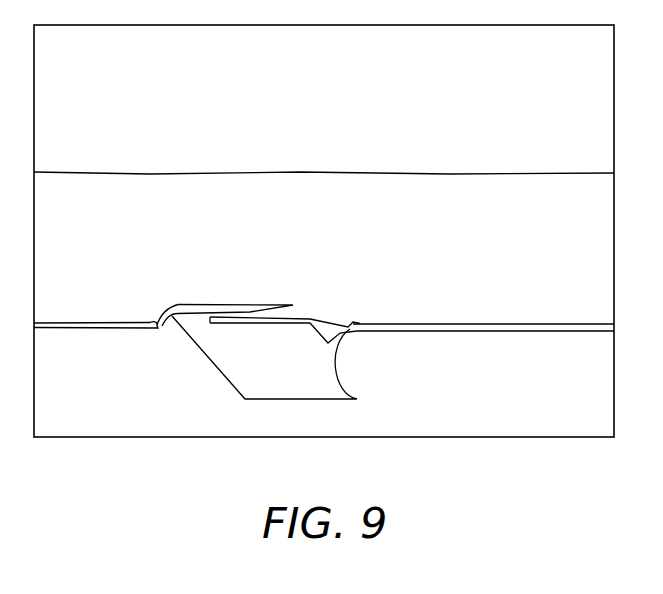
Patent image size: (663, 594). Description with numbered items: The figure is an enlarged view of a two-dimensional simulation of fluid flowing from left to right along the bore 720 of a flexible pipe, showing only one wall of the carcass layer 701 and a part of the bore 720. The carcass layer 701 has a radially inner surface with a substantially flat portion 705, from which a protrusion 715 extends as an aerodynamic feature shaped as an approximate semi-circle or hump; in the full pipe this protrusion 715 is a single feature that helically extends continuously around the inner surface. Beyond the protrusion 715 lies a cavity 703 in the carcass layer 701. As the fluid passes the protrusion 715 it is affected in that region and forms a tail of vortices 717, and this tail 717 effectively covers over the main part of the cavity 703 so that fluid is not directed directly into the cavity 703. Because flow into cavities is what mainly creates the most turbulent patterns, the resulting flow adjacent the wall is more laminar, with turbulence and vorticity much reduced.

The carcass layer 701 is at (520, 387).
The cavity 703 is at (292, 385).
The substantially flat portion 705 is at (82, 329).
The protrusion 715 is at (174, 322).
The tail of vortices 717 is at (218, 303).
The bore 720 is at (521, 146).